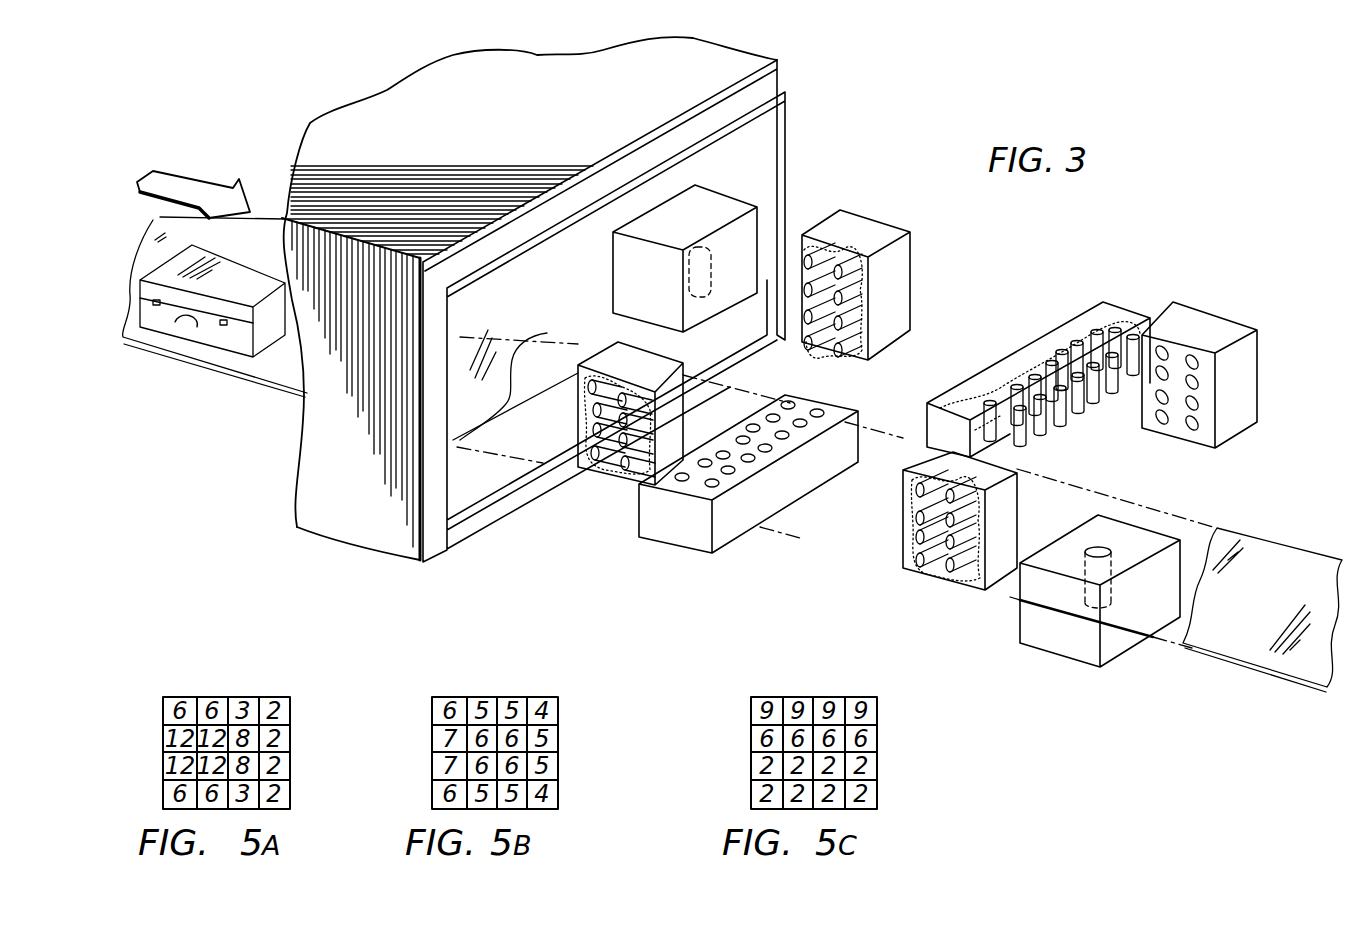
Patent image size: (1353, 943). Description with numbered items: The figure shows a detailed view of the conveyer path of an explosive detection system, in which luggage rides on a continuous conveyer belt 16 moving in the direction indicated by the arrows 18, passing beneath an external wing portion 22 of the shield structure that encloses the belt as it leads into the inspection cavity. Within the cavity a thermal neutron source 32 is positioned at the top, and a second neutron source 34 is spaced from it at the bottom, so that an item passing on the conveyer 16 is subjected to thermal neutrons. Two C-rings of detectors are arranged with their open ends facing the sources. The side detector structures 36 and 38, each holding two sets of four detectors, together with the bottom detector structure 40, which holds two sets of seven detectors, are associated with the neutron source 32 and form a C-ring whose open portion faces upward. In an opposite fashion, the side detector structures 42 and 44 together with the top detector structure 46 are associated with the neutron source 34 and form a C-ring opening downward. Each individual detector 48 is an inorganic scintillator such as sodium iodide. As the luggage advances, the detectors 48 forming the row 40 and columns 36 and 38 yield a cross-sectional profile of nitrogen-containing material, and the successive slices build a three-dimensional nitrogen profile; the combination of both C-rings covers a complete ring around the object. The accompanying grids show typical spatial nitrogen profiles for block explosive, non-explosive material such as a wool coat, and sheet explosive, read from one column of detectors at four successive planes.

The conveyer belt 16 is at (253, 253).
The arrows 18 is at (190, 183).
The external wing portion 22 is at (428, 100).
The thermal neutron source 32 is at (717, 203).
The neutron source 34 is at (1052, 632).
The side detector structure 36 is at (613, 463).
The side detector structure 38 is at (893, 262).
The bottom detector structure 40 is at (682, 527).
The side detector structure 42 is at (910, 502).
The side detector structure 44 is at (1245, 392).
The top detector structure 46 is at (1125, 303).
The detector 48 is at (848, 332).